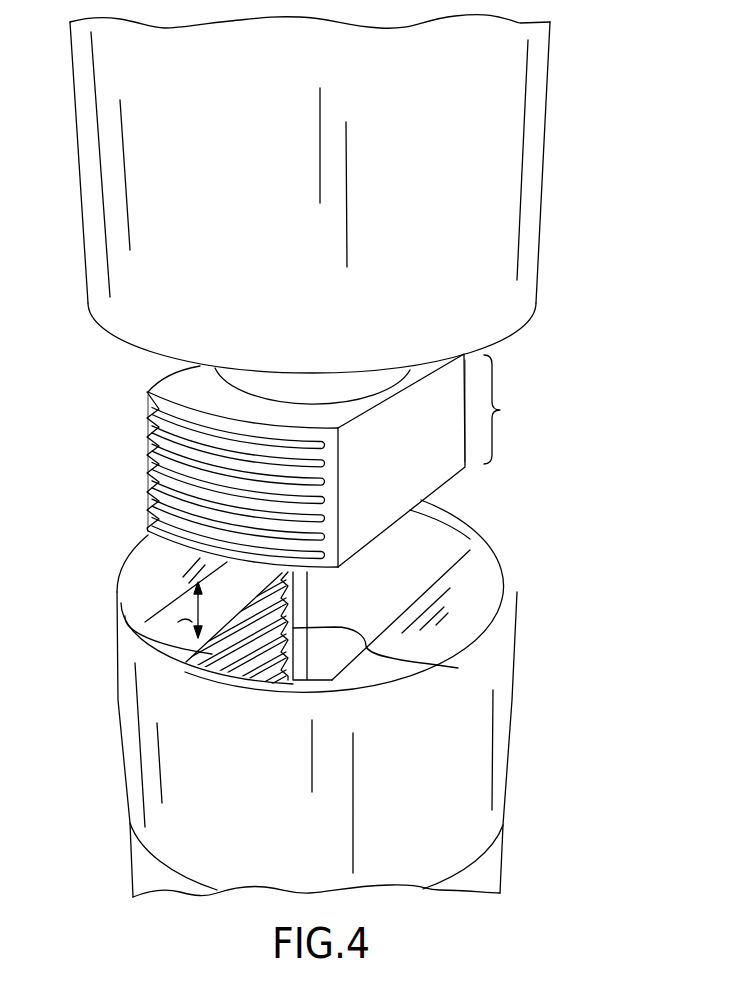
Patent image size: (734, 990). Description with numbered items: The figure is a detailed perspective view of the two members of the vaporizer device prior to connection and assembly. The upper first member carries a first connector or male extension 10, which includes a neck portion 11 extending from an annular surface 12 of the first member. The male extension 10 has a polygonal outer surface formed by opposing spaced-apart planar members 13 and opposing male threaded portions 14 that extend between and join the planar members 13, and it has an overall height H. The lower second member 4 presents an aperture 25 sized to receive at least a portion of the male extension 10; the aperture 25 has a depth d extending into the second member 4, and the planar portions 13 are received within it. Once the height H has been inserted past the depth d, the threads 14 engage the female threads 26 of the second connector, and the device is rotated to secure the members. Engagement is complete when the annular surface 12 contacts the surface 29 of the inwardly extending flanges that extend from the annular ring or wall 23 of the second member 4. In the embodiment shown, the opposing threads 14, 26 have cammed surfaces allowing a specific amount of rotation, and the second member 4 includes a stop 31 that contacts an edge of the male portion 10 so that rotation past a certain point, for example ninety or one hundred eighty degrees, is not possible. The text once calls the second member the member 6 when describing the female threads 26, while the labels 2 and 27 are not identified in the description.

The connector assembly 2 is at (560, 472).
The second member 4 is at (504, 138).
The second member 6 is at (460, 837).
The male extension 10 is at (112, 444).
The neck portion 11 is at (260, 381).
The annular surface 12 is at (122, 342).
The planar members 13 is at (153, 380).
The male threaded portions 14 is at (155, 502).
The annular ring or wall 23 is at (155, 651).
The aperture 25 is at (437, 557).
The female threads 26 is at (186, 655).
The cut face 27 is at (143, 616).
The surface of the inwardly extending flanges 29 is at (150, 573).
The stop 31 is at (457, 668).